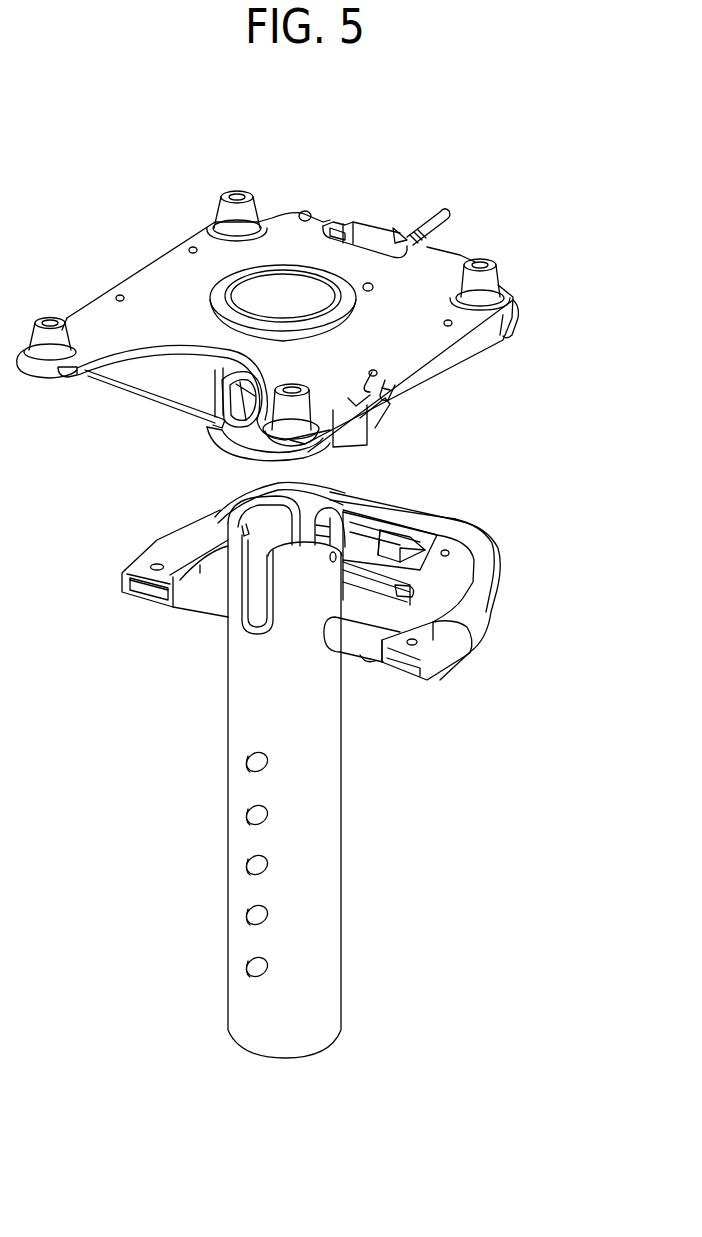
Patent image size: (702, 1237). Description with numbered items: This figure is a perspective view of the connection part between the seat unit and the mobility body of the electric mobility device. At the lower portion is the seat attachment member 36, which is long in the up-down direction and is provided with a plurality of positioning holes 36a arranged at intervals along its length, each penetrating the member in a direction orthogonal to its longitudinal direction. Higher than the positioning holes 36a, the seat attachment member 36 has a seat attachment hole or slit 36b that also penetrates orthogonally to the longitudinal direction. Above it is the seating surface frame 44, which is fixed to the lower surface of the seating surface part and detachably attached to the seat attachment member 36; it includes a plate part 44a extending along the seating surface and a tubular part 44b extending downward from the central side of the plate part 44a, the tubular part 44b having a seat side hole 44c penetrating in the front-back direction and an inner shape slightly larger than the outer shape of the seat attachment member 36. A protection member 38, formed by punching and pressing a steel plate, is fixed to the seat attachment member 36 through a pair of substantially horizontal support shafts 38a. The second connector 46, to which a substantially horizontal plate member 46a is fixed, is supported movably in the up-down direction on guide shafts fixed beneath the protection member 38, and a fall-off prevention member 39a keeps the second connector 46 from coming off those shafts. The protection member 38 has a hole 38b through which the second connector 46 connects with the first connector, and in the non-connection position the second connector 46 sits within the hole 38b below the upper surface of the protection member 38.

The seat attachment member 36 is at (293, 777).
The positioning holes 36a is at (243, 758).
The seat attachment hole or slit 36b is at (235, 607).
The protection member 38 is at (362, 599).
The support shafts 38a is at (198, 598).
The hole 38b is at (357, 489).
The fall-off prevention member 39a is at (436, 623).
The seating surface frame 44 is at (268, 352).
The plate part 44a is at (154, 287).
The tubular part 44b is at (230, 447).
The seat side hole 44c is at (172, 406).
The second connector 46 is at (440, 522).
The plate member 46a is at (400, 589).